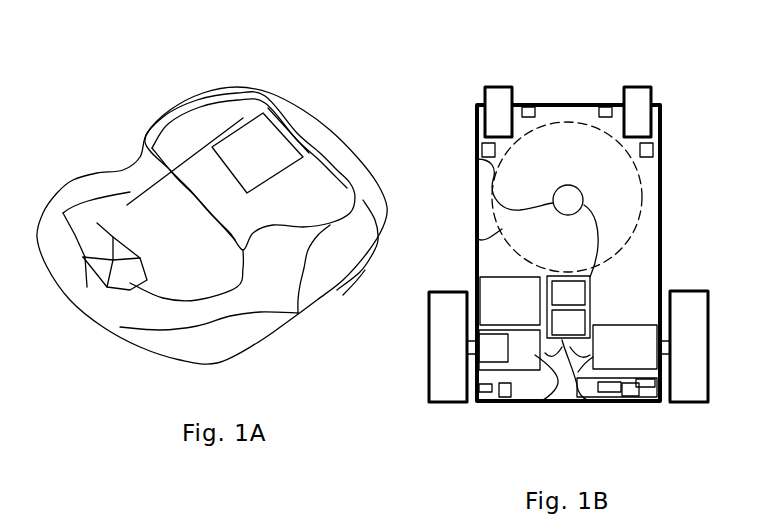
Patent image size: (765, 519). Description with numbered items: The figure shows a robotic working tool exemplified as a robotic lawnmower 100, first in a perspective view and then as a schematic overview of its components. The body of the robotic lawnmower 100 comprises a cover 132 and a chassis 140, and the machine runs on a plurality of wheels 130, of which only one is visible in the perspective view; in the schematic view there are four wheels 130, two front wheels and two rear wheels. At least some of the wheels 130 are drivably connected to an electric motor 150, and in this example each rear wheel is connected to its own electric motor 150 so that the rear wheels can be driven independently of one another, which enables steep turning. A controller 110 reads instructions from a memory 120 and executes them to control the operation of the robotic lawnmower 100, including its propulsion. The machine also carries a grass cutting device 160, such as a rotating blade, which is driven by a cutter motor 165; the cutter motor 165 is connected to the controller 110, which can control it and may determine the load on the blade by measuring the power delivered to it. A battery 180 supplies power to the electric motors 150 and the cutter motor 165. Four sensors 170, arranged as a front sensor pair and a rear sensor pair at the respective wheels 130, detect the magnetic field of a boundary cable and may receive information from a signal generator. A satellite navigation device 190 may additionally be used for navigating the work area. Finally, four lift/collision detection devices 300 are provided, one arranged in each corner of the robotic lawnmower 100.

In FIG. 1A, the robotic lawnmower 100 is at (475, 141).
In FIG. 1B, the controller 110 is at (595, 294).
In FIG. 1B, the memory 120 is at (592, 324).
In FIG. 1A, the wheels 130 is at (343, 295).
In FIG. 1B, the wheels 130 is at (628, 88).
In FIG. 1A, the cover 132 is at (107, 287).
In FIG. 1A, the chassis 140 is at (298, 313).
In FIG. 1B, the chassis 140 is at (495, 403).
In FIG. 1B, the electric motor 150 is at (540, 402).
In FIG. 1B, the grass cutting device 160 is at (474, 235).
In FIG. 1B, the cutter motor 165 is at (477, 159).
In FIG. 1B, the sensor 170 is at (590, 103).
In FIG. 1B, the battery 180 is at (478, 293).
In FIG. 1B, the satellite navigation device 190 is at (583, 402).
In FIG. 1B, the lift/collision detection device 300 is at (475, 134).